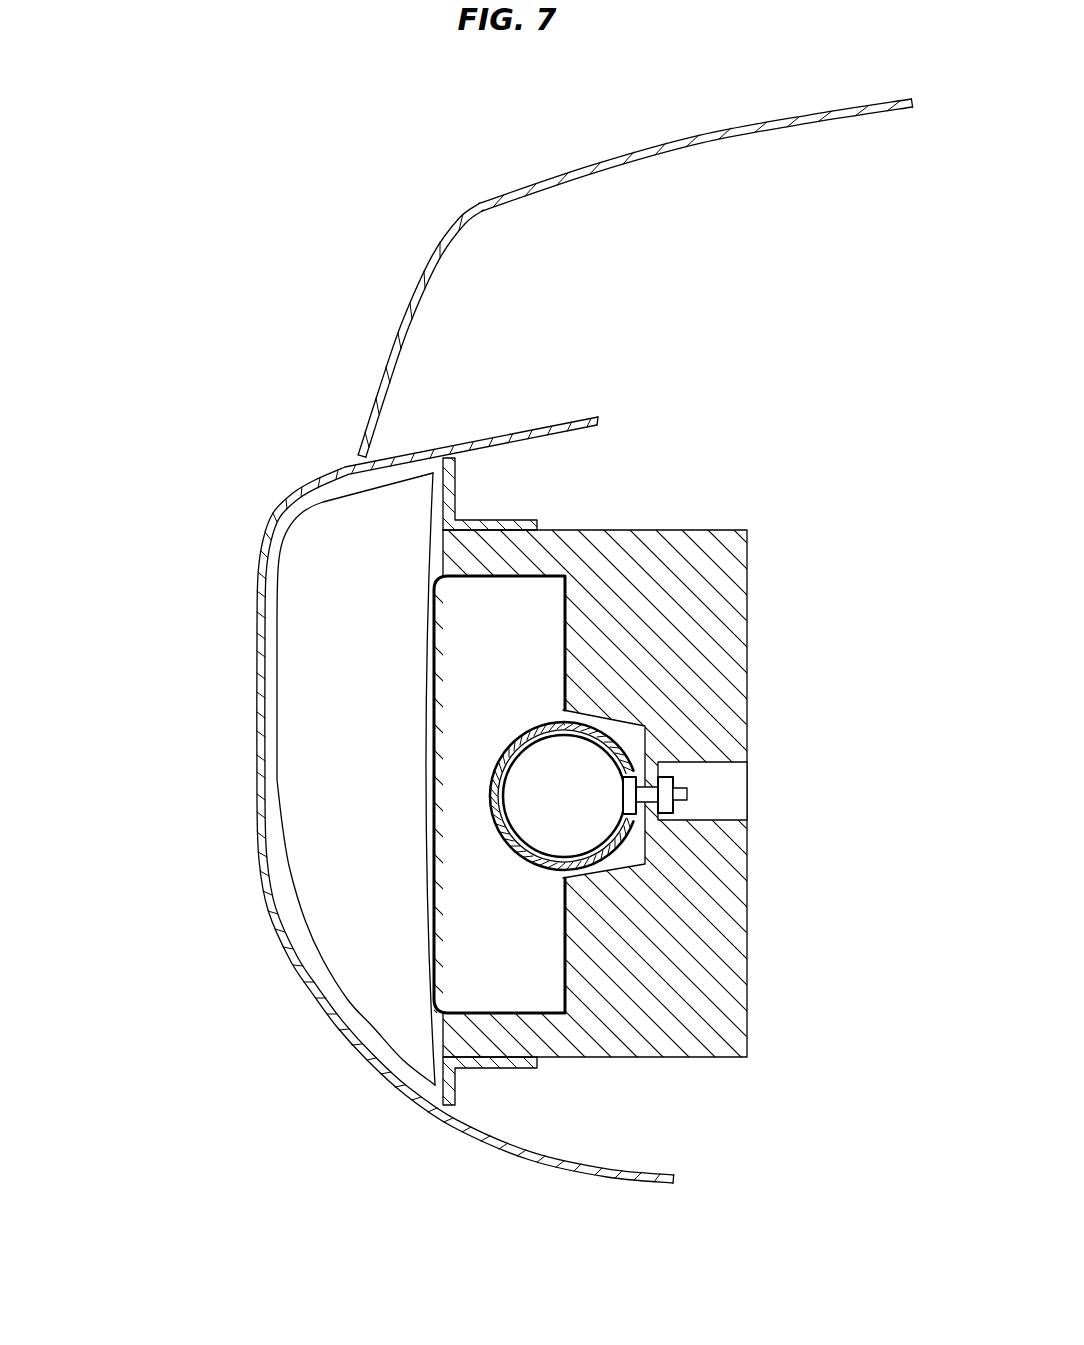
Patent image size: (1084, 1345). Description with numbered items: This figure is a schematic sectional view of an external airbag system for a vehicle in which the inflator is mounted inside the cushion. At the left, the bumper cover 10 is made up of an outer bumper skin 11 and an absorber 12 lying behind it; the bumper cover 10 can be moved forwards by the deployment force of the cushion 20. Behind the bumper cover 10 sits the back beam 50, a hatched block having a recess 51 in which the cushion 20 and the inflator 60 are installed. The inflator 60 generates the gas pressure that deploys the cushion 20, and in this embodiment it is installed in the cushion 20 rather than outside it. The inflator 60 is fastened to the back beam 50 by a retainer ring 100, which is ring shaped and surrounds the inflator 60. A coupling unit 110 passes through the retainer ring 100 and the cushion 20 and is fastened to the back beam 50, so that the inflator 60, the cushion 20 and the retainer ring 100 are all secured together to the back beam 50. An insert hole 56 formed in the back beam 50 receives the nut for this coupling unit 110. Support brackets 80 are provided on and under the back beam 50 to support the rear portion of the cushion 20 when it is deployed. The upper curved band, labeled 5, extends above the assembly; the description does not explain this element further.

The windshield glass 5 is at (715, 140).
The bumper cover 10 is at (372, 774).
The bumper skin 11 is at (252, 776).
The absorber 12 is at (322, 678).
The cushion 20 is at (474, 961).
The back beam 50 is at (713, 570).
The recess 51 is at (633, 735).
The insert hole 56 is at (733, 802).
The inflator 60 is at (587, 818).
The support bracket 80 is at (470, 495).
The retainer ring 100 is at (633, 758).
The coupling unit 110 is at (667, 786).